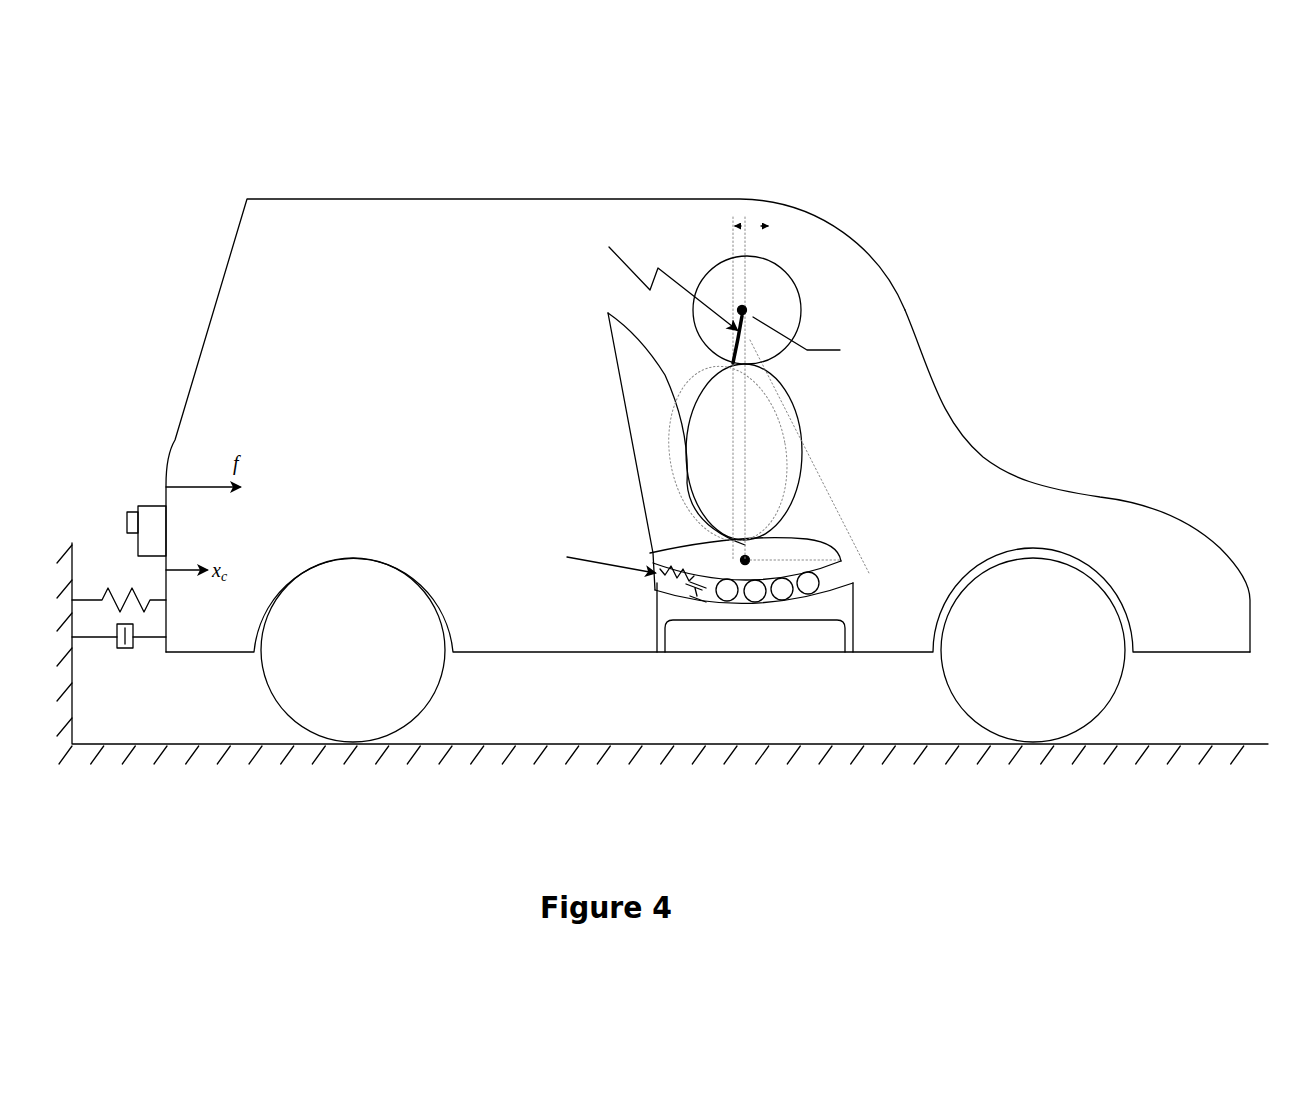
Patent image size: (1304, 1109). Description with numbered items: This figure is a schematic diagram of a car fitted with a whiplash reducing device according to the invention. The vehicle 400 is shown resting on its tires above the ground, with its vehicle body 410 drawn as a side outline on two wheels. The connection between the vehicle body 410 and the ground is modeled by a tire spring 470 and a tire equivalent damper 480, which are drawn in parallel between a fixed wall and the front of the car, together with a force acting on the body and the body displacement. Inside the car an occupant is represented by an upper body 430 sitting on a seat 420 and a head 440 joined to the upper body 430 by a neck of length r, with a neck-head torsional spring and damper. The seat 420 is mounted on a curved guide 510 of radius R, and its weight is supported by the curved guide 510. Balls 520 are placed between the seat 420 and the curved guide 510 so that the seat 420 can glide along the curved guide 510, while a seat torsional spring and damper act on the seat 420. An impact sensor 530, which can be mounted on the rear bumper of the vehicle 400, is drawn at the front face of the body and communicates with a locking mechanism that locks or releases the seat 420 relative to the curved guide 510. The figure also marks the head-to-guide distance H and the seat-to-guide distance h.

The vehicle 400 is at (907, 315).
The vehicle body 410 is at (1005, 498).
The seat 420 is at (832, 549).
The upper body 430 is at (798, 443).
The head 440 is at (783, 258).
The tire spring 470 is at (102, 593).
The tire equivalent damper 480 is at (127, 647).
The curved guide 510 is at (838, 578).
The balls 520 is at (779, 592).
The impact sensor 530 is at (128, 508).